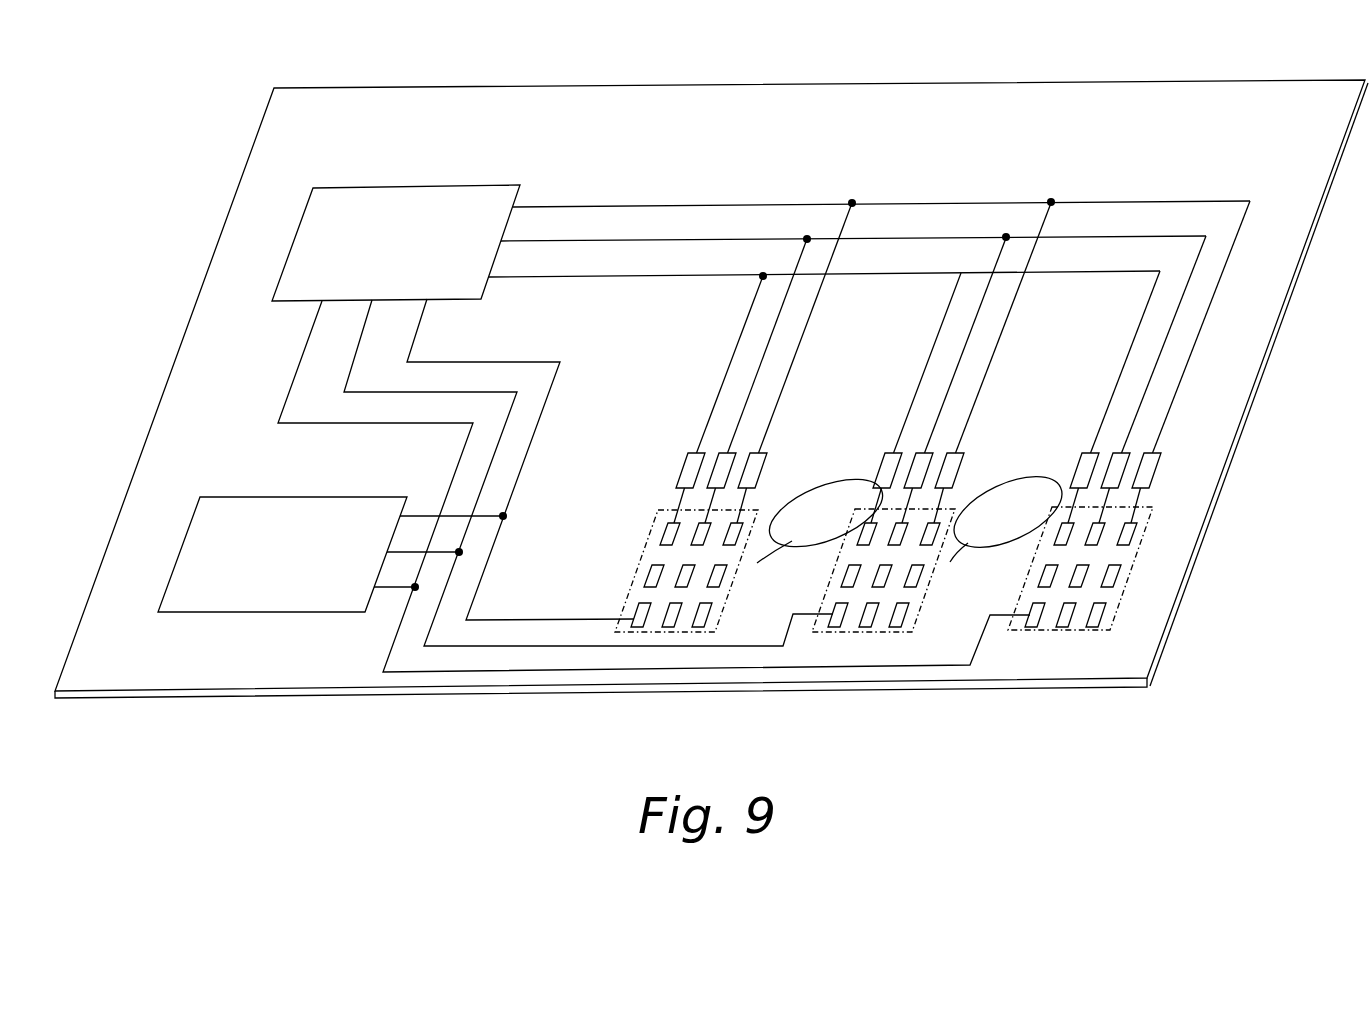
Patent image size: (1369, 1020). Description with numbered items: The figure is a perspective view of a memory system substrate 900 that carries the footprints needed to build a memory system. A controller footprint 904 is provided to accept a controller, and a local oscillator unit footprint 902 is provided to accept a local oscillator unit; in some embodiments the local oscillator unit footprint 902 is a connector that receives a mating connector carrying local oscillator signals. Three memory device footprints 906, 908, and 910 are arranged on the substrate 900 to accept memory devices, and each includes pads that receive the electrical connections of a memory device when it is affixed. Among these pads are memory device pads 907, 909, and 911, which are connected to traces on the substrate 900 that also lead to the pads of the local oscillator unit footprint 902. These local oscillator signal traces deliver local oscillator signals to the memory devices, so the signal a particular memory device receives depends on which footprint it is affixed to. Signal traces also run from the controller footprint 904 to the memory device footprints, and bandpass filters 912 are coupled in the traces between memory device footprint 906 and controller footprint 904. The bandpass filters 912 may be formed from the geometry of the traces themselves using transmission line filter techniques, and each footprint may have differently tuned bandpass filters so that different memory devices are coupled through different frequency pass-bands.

The substrate 900 is at (830, 82).
The local oscillator unit footprint 902 is at (304, 496).
The controller footprint 904 is at (418, 186).
The memory device footprint 906 is at (655, 525).
The memory device pad 907 is at (638, 604).
The memory device footprint 908 is at (848, 522).
The memory device pad 909 is at (835, 601).
The memory device footprint 910 is at (1049, 519).
The memory device pad 911 is at (1030, 601).
The bandpass filters 912 is at (682, 470).